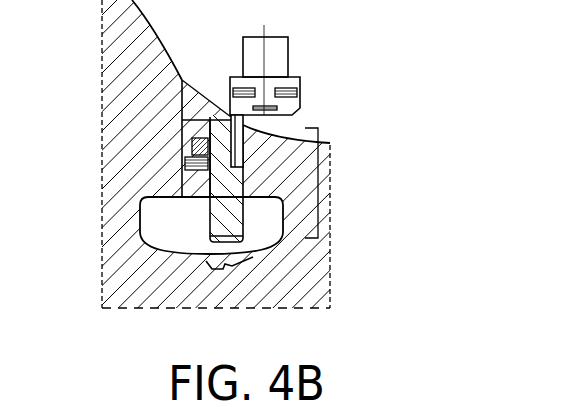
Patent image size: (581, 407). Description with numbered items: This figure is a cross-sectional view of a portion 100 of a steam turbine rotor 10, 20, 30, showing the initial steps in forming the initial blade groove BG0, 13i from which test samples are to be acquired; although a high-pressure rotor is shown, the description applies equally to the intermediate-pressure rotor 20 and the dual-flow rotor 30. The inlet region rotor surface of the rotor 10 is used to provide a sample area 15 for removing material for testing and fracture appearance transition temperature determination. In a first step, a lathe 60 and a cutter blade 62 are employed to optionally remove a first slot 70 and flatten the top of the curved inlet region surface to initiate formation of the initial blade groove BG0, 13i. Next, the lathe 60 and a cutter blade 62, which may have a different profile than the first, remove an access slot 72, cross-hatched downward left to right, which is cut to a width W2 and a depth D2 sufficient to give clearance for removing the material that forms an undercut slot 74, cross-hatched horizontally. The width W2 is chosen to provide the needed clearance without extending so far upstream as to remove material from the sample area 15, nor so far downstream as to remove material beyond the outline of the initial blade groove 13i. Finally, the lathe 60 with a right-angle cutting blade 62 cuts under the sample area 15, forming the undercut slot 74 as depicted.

The portion of the steam turbine rotor 100 is at (53, 78).
The steam turbine rotor 10 is at (290, 179).
The intermediate-pressure rotor 20 is at (290, 179).
The dual-flow rotor 30 is at (342, 281).
The initial blade groove 13i is at (174, 278).
The initial blade groove BG0 is at (160, 247).
The sample area 15 is at (165, 223).
The lathe 60 is at (252, 55).
The cutter blade 62 is at (240, 146).
The first slot 70 is at (193, 102).
The access slot 72 is at (213, 203).
The undercut slot 74 is at (186, 163).
The depth D2 is at (319, 188).
The width W2 is at (228, 272).